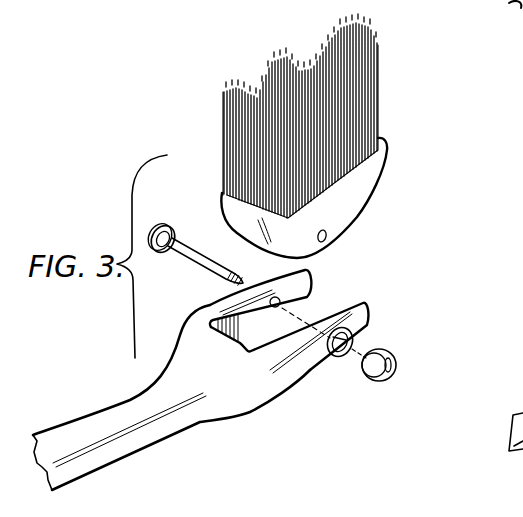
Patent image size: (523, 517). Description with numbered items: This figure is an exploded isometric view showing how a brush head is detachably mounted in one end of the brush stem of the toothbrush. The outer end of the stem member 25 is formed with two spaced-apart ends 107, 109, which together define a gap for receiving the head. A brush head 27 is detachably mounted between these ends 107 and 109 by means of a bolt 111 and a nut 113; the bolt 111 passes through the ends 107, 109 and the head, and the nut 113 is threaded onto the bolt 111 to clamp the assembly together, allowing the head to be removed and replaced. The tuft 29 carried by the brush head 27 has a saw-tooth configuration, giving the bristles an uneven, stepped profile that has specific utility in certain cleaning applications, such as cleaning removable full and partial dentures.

The stem member 25 is at (158, 435).
The brush head 27 is at (367, 190).
The tuft 29 is at (377, 107).
The spaced-apart end 107 is at (305, 282).
The spaced-apart end 109 is at (362, 313).
The bolt 111 is at (207, 267).
The nut 113 is at (396, 367).